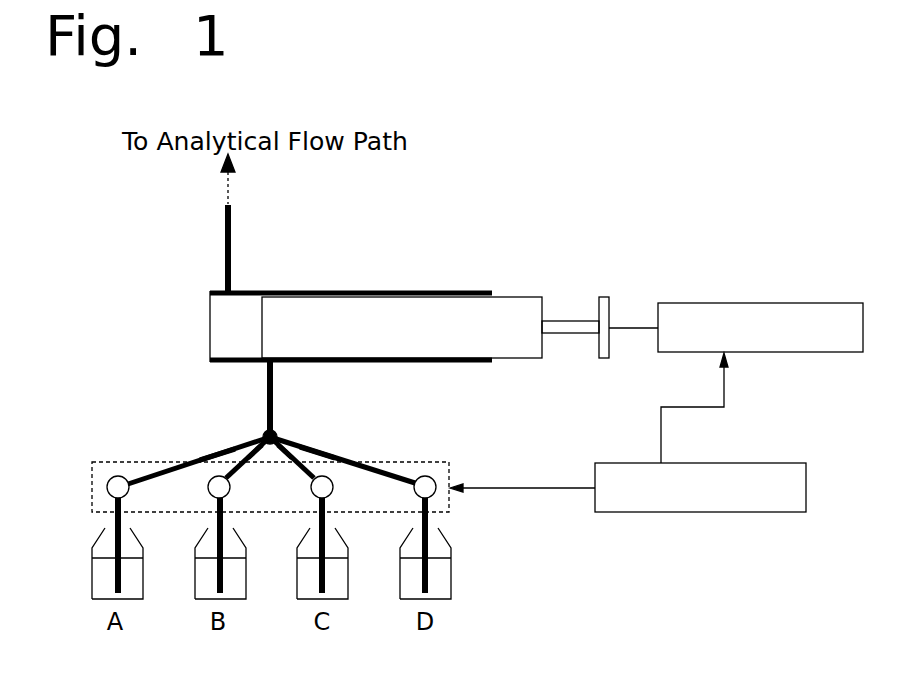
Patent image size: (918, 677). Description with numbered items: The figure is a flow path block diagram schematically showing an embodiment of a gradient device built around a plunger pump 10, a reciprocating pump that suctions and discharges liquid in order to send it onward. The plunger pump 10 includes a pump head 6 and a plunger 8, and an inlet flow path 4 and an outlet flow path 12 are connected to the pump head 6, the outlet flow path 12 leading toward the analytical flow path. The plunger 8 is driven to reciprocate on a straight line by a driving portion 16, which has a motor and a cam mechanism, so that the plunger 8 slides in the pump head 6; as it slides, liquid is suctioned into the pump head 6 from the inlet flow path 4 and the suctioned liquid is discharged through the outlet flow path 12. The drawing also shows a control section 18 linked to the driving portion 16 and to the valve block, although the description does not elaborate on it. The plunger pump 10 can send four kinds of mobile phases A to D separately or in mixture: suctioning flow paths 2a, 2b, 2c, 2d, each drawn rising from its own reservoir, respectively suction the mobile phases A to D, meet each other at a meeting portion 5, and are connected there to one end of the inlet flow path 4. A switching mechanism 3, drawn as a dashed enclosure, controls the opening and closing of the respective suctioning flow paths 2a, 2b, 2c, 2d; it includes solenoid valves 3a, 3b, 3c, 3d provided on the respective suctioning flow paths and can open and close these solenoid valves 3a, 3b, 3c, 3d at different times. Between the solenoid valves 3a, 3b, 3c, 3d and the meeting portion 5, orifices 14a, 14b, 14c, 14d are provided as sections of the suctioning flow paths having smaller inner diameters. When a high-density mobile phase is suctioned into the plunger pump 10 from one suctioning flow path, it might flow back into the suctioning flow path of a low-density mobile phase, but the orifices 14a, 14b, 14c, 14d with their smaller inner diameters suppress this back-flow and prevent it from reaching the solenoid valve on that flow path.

The plunger pump 10 is at (413, 283).
The pump head 6 is at (252, 291).
The plunger 8 is at (515, 296).
The outlet flow path 12 is at (231, 227).
The driving portion 16 is at (788, 303).
The control section 18 is at (773, 462).
The inlet flow path 4 is at (273, 391).
The meeting portion 5 is at (274, 433).
The switching mechanism 3 is at (450, 462).
The suctioning flow path 2a is at (156, 473).
The suctioning flow path 2b is at (220, 458).
The suctioning flow path 2c is at (340, 453).
The suctioning flow path 2d is at (387, 470).
The orifice 14a is at (237, 445).
The orifice 14b is at (258, 435).
The orifice 14c is at (283, 440).
The orifice 14d is at (304, 445).
The solenoid valve 3a is at (108, 486).
The solenoid valve 3b is at (207, 487).
The solenoid valve 3c is at (310, 487).
The solenoid valve 3d is at (416, 485).